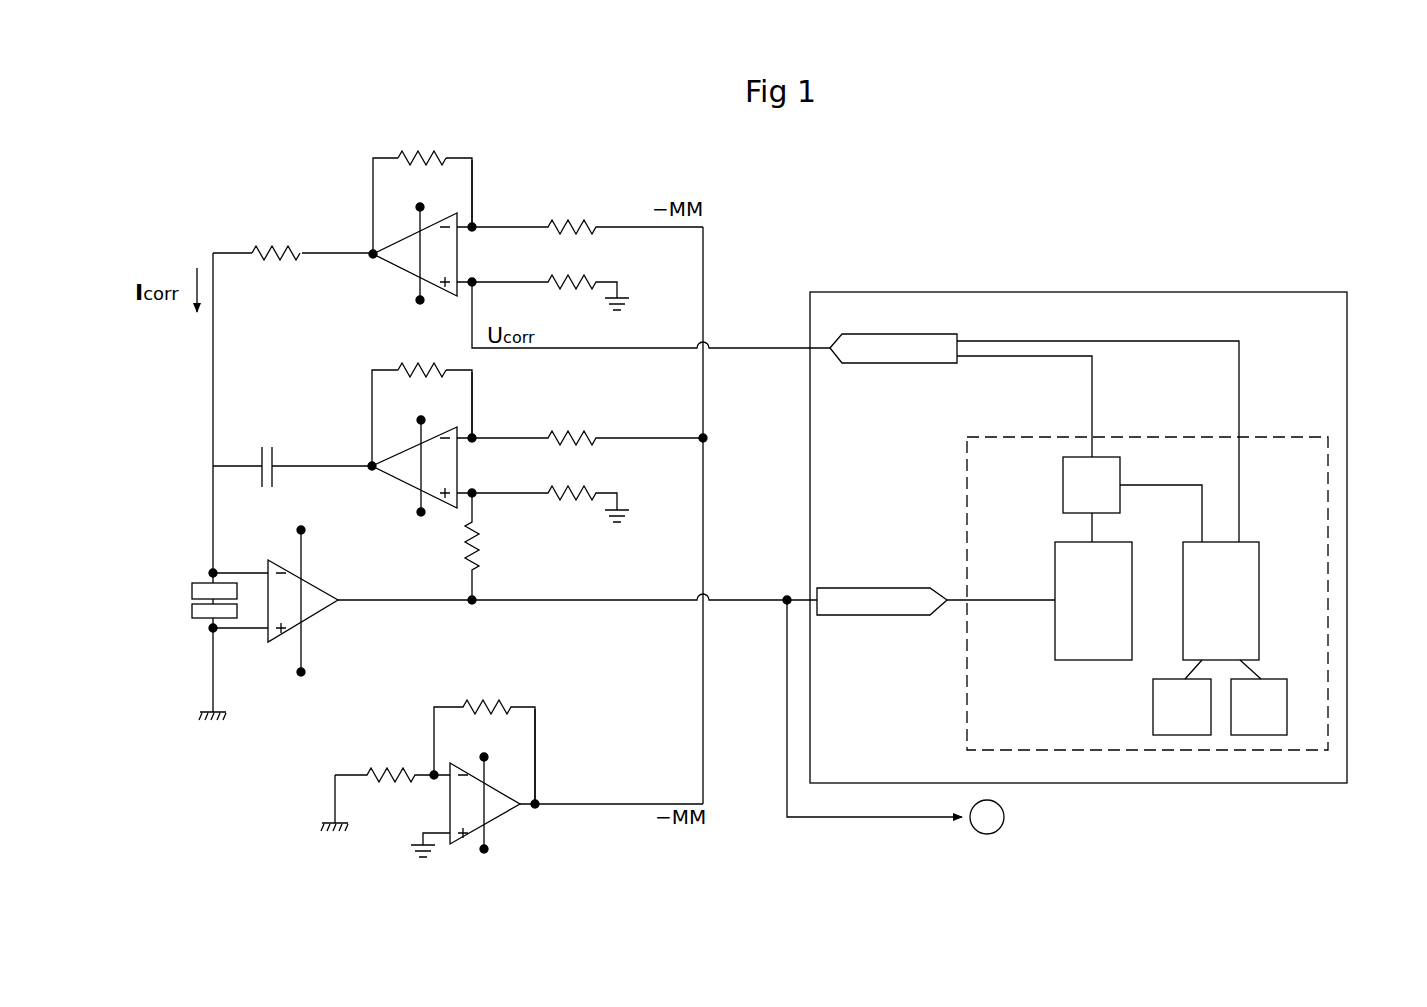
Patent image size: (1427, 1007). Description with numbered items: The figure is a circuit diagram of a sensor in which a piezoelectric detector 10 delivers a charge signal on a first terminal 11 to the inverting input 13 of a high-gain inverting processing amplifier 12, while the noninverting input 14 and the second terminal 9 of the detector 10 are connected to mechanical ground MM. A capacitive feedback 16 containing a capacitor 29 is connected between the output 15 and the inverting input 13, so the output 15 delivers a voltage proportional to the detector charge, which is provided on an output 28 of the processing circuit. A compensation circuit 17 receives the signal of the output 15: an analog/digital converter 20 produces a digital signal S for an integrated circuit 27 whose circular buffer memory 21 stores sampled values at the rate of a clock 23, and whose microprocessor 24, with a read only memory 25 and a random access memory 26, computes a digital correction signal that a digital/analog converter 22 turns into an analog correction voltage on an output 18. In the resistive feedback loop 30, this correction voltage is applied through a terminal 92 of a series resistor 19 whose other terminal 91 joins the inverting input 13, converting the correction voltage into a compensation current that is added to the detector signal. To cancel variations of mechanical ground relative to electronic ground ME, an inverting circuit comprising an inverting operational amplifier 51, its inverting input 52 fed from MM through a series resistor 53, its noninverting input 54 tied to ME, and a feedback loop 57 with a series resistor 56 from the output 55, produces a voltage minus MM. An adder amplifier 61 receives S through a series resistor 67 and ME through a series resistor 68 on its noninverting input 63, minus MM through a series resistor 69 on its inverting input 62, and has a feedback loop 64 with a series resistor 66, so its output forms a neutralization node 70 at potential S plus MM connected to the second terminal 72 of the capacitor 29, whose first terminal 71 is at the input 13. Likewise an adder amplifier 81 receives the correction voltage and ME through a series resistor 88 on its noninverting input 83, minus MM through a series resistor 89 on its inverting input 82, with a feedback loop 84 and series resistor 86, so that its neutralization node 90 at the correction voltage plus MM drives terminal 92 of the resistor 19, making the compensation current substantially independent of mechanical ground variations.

The second terminal 9 is at (212, 680).
The piezoelectric detector 10 is at (187, 616).
The first terminal 11 is at (210, 576).
The processing amplifier 12 is at (305, 610).
The inverting input 13 is at (267, 568).
The noninverting input 14 is at (266, 640).
The output 15 is at (340, 597).
The capacitive feedback 16 is at (292, 435).
The compensation circuit 17 is at (1090, 291).
The output 18 is at (785, 345).
The series resistor 19 is at (277, 212).
The analog/digital converter 20 is at (886, 587).
The circular buffer memory 21 is at (1063, 554).
The digital/analog converter 22 is at (897, 333).
The clock 23 is at (1068, 490).
The microprocessor 24 is at (1250, 553).
The read only memory 25 is at (1185, 725).
The random access memory 26 is at (1262, 725).
The integrated circuit 27 is at (1329, 662).
The output 28 is at (1004, 817).
The capacitor 29 is at (263, 476).
The resistive feedback loop 30 is at (198, 215).
The inverting operational amplifier 51 is at (505, 814).
The inverting input 52 is at (447, 782).
The series resistor 53 is at (390, 767).
The noninverting input 54 is at (447, 845).
The output 55 is at (538, 801).
The series resistor 56 is at (490, 705).
The feedback loop 57 is at (536, 722).
The adder amplifier 61 is at (405, 480).
The inverting input 62 is at (462, 442).
The noninverting input 63 is at (462, 492).
The feedback loop 64 is at (474, 400).
The series resistor 66 is at (405, 364).
The series resistor 67 is at (478, 548).
The series resistor 68 is at (578, 489).
The series resistor 69 is at (578, 434).
The neutralization node 70 is at (370, 463).
The first terminal 71 is at (260, 462).
The second terminal 72 is at (276, 462).
The adder amplifier 81 is at (405, 268).
The inverting input 82 is at (462, 231).
The noninverting input 83 is at (462, 281).
The feedback loop 84 is at (470, 156).
The series resistor 86 is at (419, 151).
The series resistor 88 is at (578, 280).
The series resistor 89 is at (578, 224).
The neutralization node 90 is at (374, 251).
The terminal 91 is at (250, 250).
The terminal 92 is at (305, 250).